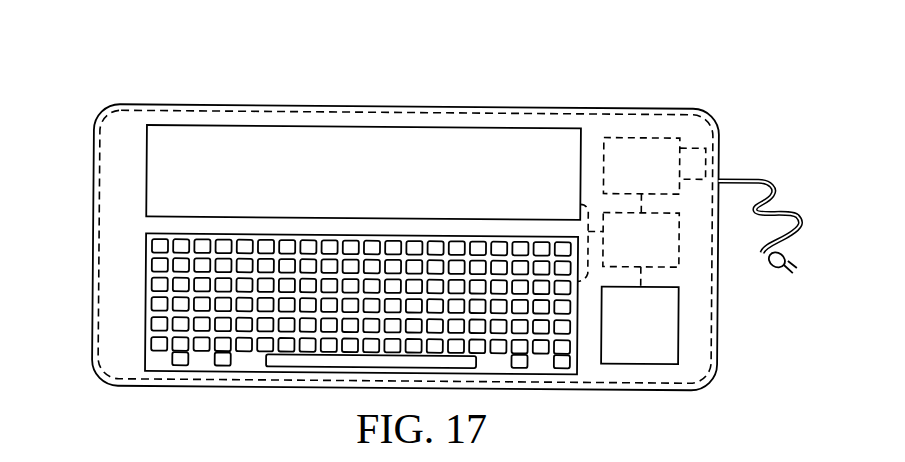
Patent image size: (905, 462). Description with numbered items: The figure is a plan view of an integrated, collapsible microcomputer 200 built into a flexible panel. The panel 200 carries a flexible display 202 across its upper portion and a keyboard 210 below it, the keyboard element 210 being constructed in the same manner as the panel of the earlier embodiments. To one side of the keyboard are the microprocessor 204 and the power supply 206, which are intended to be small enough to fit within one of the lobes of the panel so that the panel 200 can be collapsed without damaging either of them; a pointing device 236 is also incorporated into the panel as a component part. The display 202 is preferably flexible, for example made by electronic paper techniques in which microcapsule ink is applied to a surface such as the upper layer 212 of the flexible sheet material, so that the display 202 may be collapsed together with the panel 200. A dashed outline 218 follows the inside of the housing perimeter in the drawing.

The collapsible microcomputer 200 is at (585, 108).
The display 202 is at (321, 146).
The microprocessor 204 is at (722, 271).
The power supply 206 is at (666, 160).
The keyboard 210 is at (143, 282).
The upper layer 212 is at (127, 182).
The seal 218 is at (220, 110).
The pointing device 236 is at (660, 333).